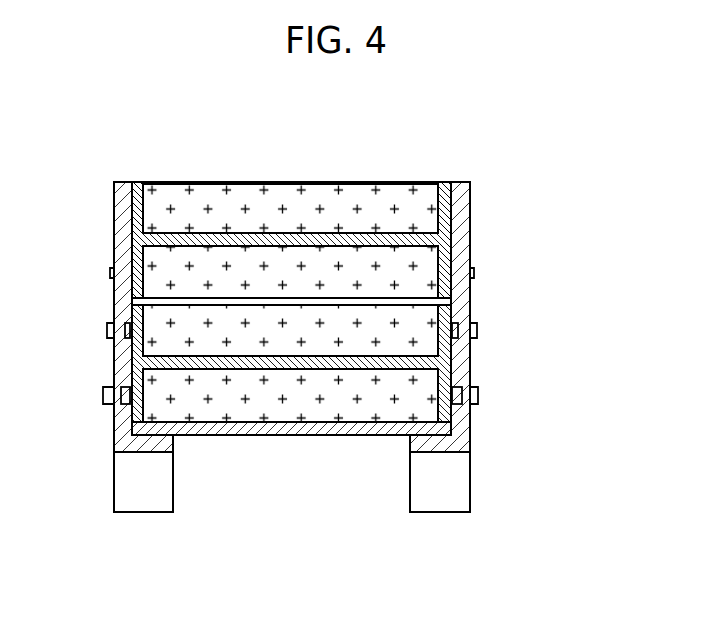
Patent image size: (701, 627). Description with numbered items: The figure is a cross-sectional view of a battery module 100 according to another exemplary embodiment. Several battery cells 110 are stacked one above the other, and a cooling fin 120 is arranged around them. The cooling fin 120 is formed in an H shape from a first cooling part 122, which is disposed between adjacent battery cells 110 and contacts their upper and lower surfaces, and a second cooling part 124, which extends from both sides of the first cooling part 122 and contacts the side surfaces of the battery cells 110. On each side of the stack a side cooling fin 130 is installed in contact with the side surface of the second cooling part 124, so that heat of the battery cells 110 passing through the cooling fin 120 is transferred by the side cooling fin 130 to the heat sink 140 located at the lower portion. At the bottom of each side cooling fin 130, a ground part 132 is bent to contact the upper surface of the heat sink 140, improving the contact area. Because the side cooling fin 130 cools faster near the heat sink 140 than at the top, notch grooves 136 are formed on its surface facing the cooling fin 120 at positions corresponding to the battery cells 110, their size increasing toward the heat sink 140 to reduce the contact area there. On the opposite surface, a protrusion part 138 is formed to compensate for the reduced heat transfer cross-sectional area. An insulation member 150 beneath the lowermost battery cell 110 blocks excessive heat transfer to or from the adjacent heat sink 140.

The battery module 100 is at (378, 118).
The battery cell 110 is at (415, 205).
The cooling fin 120 is at (382, 289).
The first cooling part 122 is at (393, 247).
The second cooling part 124 is at (445, 220).
The side cooling fin 130 is at (458, 295).
The ground part 132 is at (430, 443).
The notch groove 136 is at (456, 405).
The protrusion part 138 is at (480, 395).
The heat sink 140 is at (452, 487).
The insulation member 150 is at (145, 430).